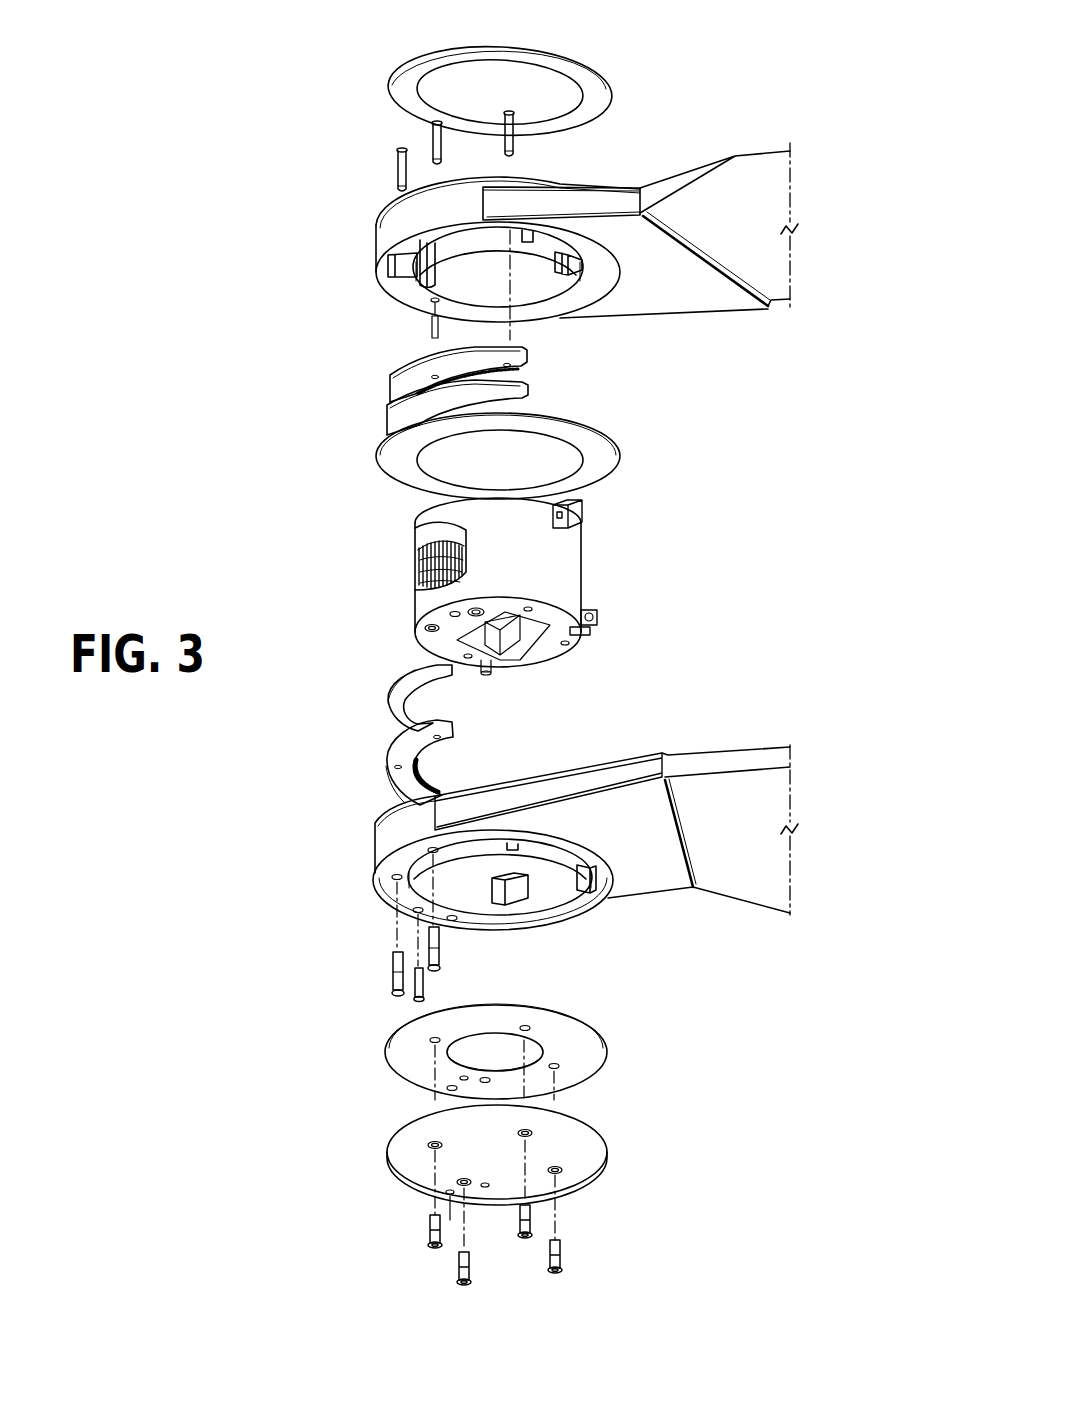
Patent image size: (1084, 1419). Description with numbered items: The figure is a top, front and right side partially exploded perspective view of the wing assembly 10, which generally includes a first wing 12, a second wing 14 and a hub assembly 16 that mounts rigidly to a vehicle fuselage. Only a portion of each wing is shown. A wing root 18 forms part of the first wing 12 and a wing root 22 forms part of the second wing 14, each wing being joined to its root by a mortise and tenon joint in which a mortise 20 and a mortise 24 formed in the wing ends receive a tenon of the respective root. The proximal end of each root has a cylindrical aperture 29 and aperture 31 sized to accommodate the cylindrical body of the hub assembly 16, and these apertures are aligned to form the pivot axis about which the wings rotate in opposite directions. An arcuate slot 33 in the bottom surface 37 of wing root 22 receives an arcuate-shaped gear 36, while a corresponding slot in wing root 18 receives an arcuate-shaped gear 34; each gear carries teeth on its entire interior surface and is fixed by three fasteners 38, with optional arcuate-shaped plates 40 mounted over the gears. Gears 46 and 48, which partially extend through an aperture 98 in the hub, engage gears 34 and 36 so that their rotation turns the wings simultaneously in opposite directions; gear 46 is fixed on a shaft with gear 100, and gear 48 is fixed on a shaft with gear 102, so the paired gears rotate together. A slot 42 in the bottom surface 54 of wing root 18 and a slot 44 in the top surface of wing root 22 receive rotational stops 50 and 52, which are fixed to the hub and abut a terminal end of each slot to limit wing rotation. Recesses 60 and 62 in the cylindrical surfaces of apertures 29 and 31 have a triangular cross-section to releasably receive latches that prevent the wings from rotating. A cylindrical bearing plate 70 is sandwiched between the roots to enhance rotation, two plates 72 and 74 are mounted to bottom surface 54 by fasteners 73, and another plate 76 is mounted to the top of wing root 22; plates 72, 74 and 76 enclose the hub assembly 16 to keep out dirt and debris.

The wing assembly 10 is at (151, 211).
The first wing 12 is at (703, 869).
The second wing 14 is at (679, 229).
The hub assembly 16 is at (475, 557).
The wing root 18 is at (585, 869).
The mortise 20 is at (773, 902).
The wing root 22 is at (545, 229).
The mortise 24 is at (762, 263).
The cylindrical aperture 29 is at (482, 904).
The cylindrical aperture 31 is at (533, 294).
The arcuate slot 33 is at (400, 266).
The arcuate-shaped gear 34 is at (393, 773).
The arcuate-shaped gear 36 is at (393, 381).
The bottom surface 37 is at (403, 292).
The fasteners 38 is at (399, 164).
The arcuate-shaped plates 40 is at (398, 424).
The slot 42 is at (588, 881).
The slot 44 is at (564, 266).
The gear 46 is at (423, 588).
The gear 48 is at (369, 572).
The rotational stop 50 is at (588, 637).
The rotational stop 52 is at (574, 512).
The bottom surface 54 is at (466, 921).
The recess 60 is at (520, 895).
The recess 62 is at (427, 268).
The cylindrical bearing plate 70 is at (582, 437).
The plate 72 is at (587, 1060).
The fasteners 73 is at (432, 1224).
The plate 74 is at (580, 1140).
The plate 76 is at (570, 66).
The aperture 98 is at (437, 532).
The gear 100 is at (413, 560).
The gear 102 is at (416, 578).